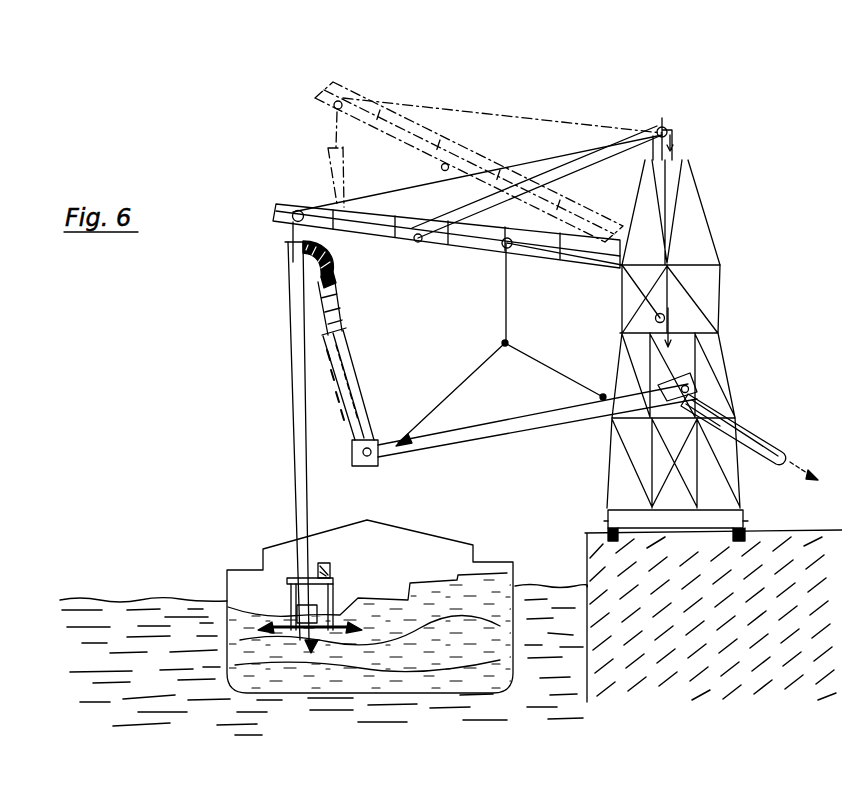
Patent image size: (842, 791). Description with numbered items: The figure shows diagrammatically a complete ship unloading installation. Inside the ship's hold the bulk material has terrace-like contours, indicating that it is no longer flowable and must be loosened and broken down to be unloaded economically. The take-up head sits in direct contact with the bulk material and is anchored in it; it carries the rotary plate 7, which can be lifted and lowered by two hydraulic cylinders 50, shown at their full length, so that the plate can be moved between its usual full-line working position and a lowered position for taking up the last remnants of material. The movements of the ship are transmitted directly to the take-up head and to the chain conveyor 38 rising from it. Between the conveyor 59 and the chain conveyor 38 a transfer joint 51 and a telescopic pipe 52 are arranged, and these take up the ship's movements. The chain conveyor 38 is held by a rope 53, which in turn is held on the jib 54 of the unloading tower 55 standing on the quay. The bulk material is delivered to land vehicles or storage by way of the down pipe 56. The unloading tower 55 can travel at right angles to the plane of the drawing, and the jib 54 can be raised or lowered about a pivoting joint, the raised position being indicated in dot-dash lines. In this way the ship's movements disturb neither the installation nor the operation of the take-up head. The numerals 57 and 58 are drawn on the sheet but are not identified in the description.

The rotary plate 7 is at (282, 620).
The chain conveyor 38 is at (300, 515).
The hydraulic cylinders 50 is at (340, 600).
The transfer joint 51 is at (334, 263).
The telescopic pipe 52 is at (360, 415).
The rope 53 is at (400, 189).
The jib 54 is at (297, 203).
The unloading tower 55 is at (720, 298).
The down pipe 56 is at (777, 450).
The hoisting cable 57 is at (618, 270).
The boom in raised position 58 is at (367, 84).
The conveyor 59 is at (473, 432).